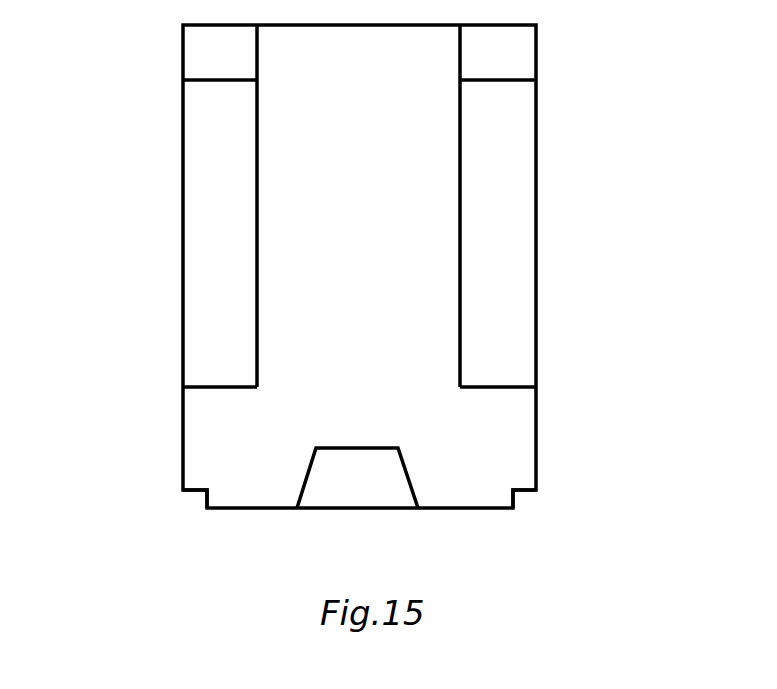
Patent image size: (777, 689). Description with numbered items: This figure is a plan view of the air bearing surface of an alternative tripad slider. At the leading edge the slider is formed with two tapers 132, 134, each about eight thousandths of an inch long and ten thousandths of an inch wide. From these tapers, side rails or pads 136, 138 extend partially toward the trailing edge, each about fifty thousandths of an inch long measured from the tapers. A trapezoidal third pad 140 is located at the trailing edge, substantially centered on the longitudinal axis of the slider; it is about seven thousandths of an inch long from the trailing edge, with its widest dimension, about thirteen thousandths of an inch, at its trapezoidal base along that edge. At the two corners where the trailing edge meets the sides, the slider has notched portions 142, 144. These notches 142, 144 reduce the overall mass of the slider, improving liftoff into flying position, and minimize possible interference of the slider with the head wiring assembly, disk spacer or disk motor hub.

The taper 132 is at (208, 54).
The taper 134 is at (502, 59).
The side rail 136 is at (208, 264).
The side rail 138 is at (512, 273).
The trapezoidal third pad 140 is at (360, 491).
The notched portion 142 is at (205, 490).
The notched portion 144 is at (518, 495).